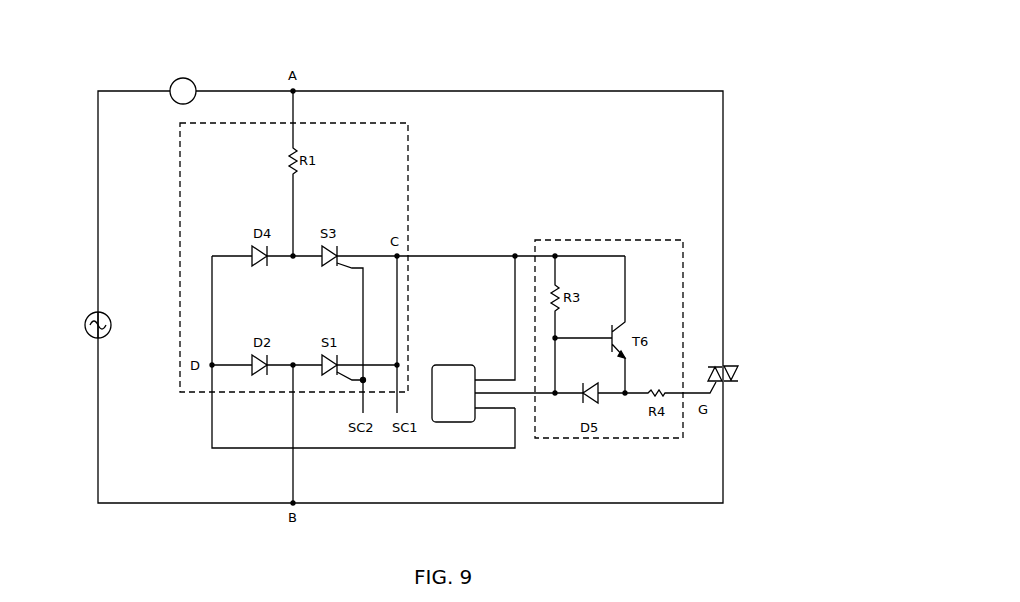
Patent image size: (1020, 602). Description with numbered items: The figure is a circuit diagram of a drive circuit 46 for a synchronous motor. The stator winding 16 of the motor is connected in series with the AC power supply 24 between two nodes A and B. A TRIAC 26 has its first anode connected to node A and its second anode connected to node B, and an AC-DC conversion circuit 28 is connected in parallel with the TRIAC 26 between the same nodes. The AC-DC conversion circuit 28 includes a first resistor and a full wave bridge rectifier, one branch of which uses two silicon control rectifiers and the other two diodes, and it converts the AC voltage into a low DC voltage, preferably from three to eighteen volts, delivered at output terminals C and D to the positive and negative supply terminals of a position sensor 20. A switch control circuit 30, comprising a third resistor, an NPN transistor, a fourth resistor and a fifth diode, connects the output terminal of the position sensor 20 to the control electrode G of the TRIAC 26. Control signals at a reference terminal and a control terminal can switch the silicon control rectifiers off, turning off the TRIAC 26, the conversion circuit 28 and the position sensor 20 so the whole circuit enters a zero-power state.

The stator winding 16 is at (171, 103).
The AC power supply 24 is at (108, 312).
The AC-DC conversion circuit 28 is at (408, 205).
The switch control circuit 30 is at (613, 240).
The position sensor 20 is at (452, 365).
The TRIAC 26 is at (737, 372).
The drive circuit 46 is at (704, 75).